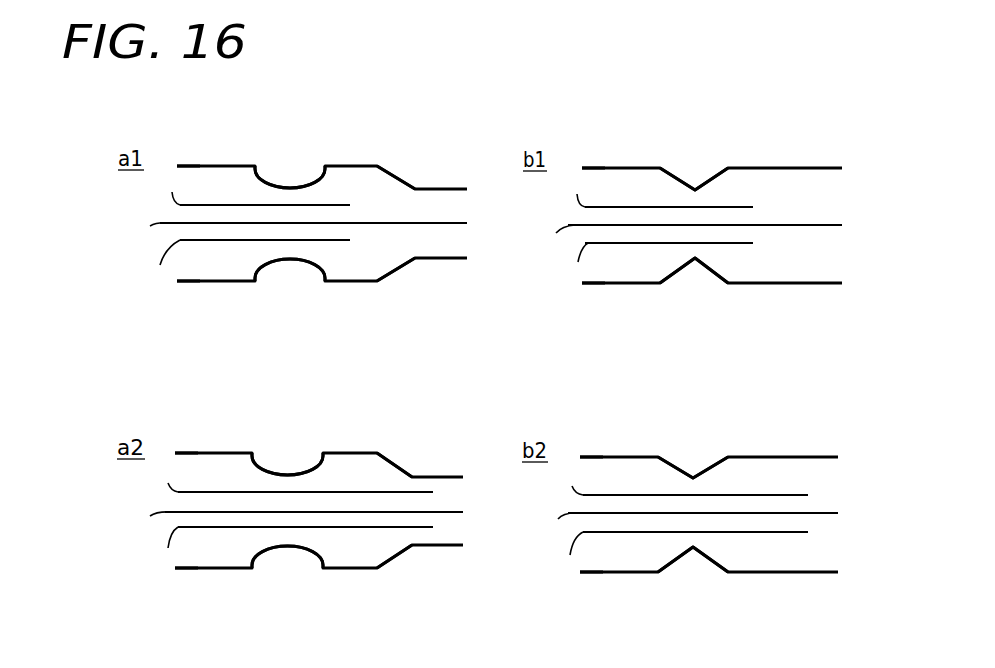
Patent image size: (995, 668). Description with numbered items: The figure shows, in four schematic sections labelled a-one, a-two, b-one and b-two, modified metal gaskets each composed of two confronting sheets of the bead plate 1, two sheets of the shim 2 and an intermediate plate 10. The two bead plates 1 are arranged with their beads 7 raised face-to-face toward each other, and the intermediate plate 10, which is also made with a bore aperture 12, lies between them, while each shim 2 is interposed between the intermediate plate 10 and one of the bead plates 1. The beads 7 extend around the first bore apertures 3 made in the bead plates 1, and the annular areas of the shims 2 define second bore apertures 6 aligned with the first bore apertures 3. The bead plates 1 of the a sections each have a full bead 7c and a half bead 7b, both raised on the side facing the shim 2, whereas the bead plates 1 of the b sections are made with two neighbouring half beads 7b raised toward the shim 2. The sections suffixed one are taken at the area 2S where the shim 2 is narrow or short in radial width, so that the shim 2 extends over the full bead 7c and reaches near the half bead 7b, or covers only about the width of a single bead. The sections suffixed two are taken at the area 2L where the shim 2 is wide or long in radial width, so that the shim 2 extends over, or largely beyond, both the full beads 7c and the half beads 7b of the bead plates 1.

The bead plate 1 is at (443, 188).
The shim 2 is at (477, 381).
The area narrow in radial width 2S is at (466, 224).
The area long in radial width 2L is at (493, 512).
The first bore aperture 3 is at (177, 166).
The second bore aperture 6 is at (367, 374).
The bead 7 is at (510, 374).
The half bead 7b is at (552, 369).
The full bead 7c is at (288, 367).
The intermediate plate 10 is at (430, 223).
The bore aperture 12 is at (350, 378).